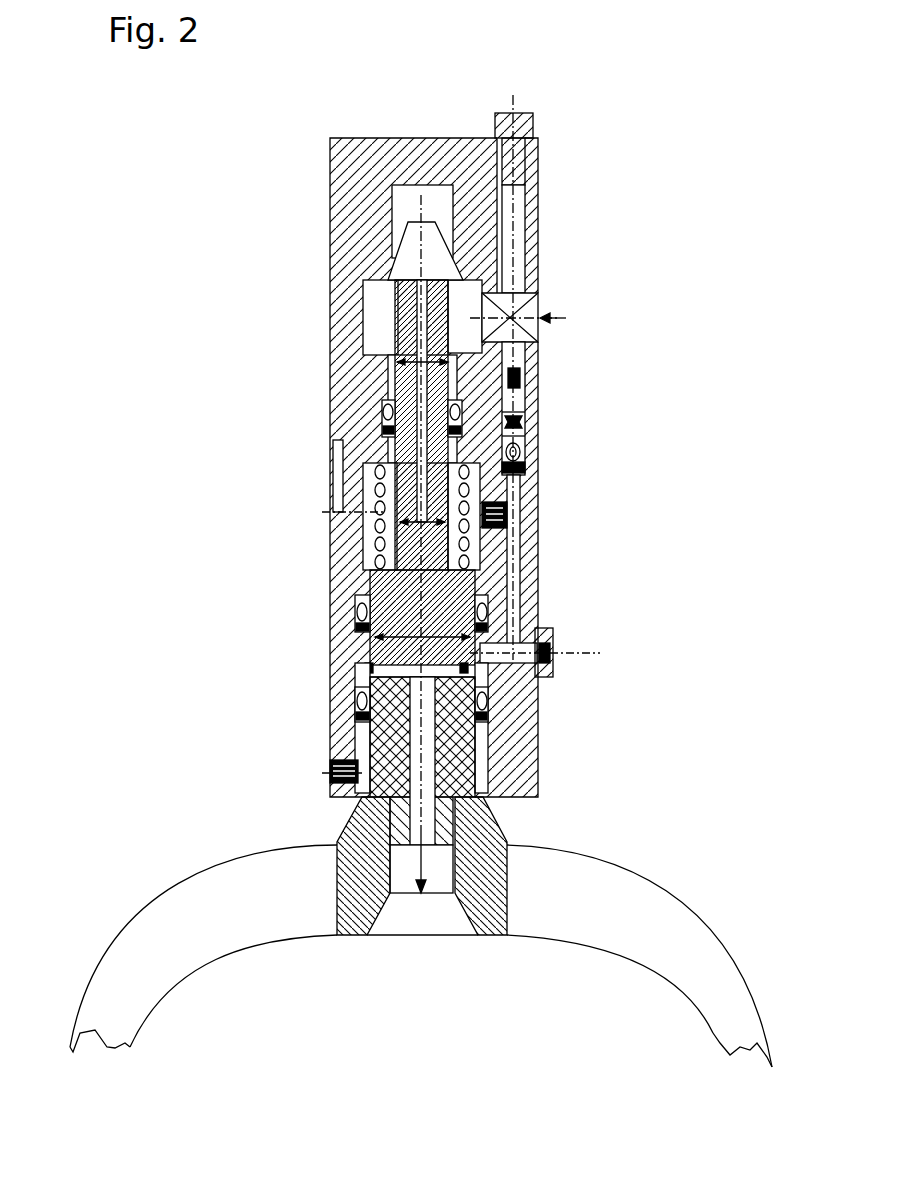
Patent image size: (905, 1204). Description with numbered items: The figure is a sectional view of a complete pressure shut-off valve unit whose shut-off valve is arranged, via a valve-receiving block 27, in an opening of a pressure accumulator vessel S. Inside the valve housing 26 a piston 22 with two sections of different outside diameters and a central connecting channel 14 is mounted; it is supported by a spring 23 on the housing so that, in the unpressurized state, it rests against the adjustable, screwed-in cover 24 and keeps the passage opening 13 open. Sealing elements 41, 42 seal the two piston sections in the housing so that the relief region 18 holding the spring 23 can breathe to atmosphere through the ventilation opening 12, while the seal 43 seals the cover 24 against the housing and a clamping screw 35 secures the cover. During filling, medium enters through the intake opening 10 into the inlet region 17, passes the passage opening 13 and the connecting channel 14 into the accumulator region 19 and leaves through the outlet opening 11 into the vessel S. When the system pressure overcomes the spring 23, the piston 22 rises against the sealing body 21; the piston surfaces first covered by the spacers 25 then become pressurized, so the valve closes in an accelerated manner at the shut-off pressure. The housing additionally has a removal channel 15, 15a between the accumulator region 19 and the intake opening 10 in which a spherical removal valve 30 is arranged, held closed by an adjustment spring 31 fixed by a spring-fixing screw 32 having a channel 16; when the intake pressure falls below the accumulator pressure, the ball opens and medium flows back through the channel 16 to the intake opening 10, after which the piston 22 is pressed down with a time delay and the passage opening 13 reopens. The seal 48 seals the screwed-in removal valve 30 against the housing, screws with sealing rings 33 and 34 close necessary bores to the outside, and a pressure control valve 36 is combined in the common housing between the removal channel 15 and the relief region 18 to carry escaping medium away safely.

The intake opening 10 is at (520, 298).
The outlet opening 11 is at (427, 823).
The ventilation opening 12 is at (338, 505).
The passage opening 13 is at (395, 282).
The connecting channel 14 is at (423, 318).
The removal channel 15 is at (513, 603).
The removal channel 15a is at (497, 653).
The channel 16 is at (562, 320).
The inlet region 17 is at (375, 303).
The relief region 18 is at (382, 507).
The accumulator region 19 is at (362, 702).
The sealing body 21 is at (408, 205).
The piston 22 is at (363, 668).
The spring 23 is at (378, 550).
The cover 24 is at (457, 768).
The spacers 25 is at (482, 703).
The valve housing 26 is at (352, 205).
The valve-receiving block 27 is at (352, 848).
The removal valve 30 is at (517, 444).
The spring 31 is at (520, 402).
The spring-fixing screw 32 is at (515, 378).
The screw with sealing ring 33 is at (527, 123).
The screw with sealing ring 34 is at (548, 652).
The clamping screw 35 is at (345, 772).
The pressure control valve 36 is at (507, 517).
The sealing element 41 is at (362, 614).
The sealing element 42 is at (387, 412).
The seal 43 is at (490, 735).
The seal 48 is at (520, 468).
The pressure accumulator vessel S is at (650, 898).